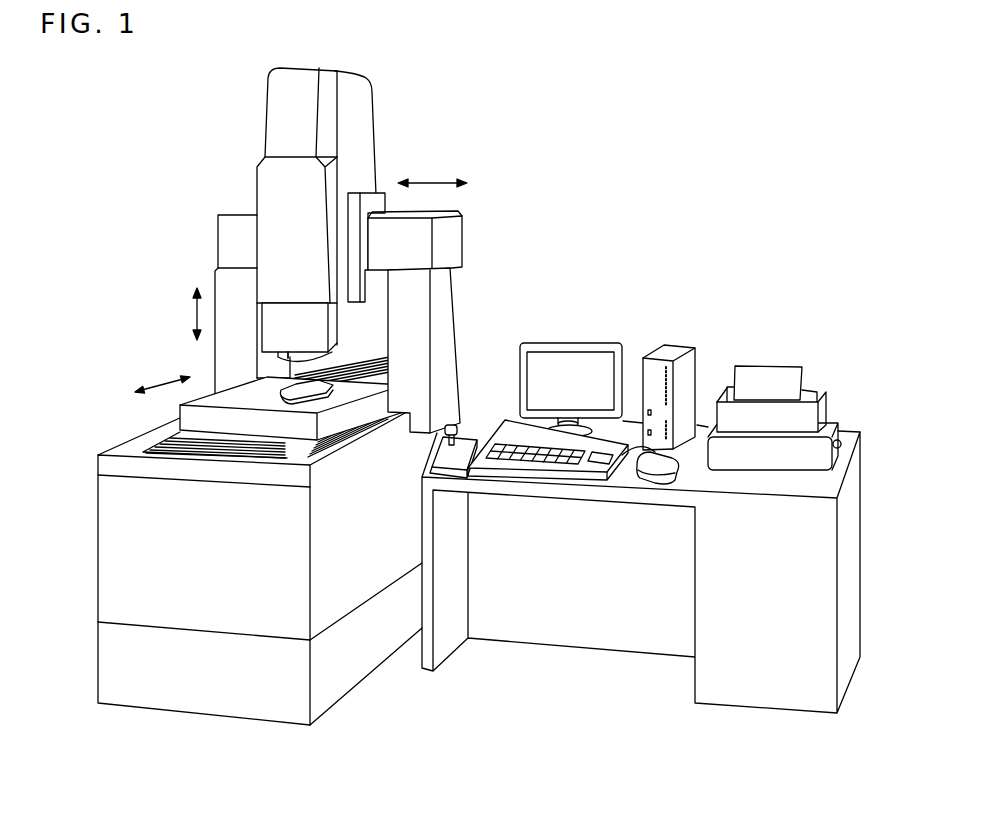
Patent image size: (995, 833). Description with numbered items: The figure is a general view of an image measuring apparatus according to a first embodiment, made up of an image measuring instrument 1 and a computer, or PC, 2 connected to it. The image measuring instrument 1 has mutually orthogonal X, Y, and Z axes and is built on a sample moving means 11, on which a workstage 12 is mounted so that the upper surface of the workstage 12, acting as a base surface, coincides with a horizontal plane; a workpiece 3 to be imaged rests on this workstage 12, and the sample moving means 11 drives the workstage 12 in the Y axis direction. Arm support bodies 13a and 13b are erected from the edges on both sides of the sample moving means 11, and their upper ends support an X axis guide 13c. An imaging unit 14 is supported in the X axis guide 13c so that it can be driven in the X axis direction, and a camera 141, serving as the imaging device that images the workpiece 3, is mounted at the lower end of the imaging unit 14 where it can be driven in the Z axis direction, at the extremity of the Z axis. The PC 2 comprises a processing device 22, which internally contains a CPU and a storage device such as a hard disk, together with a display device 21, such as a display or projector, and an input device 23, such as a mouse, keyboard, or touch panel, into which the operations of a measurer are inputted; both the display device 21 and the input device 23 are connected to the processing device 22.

The image measuring instrument 1 is at (299, 382).
The computer (PC) 2 is at (641, 482).
The workpiece 3 is at (313, 395).
The sample moving means 11 is at (173, 437).
The workstage 12 is at (253, 393).
The arm support body 13a is at (443, 305).
The arm support body 13b is at (215, 285).
The X axis guide 13c is at (233, 213).
The imaging unit 14 is at (267, 105).
The camera 141 is at (318, 363).
The display device 21 is at (572, 342).
The processing device 22 is at (672, 355).
The input device 23 is at (630, 468).